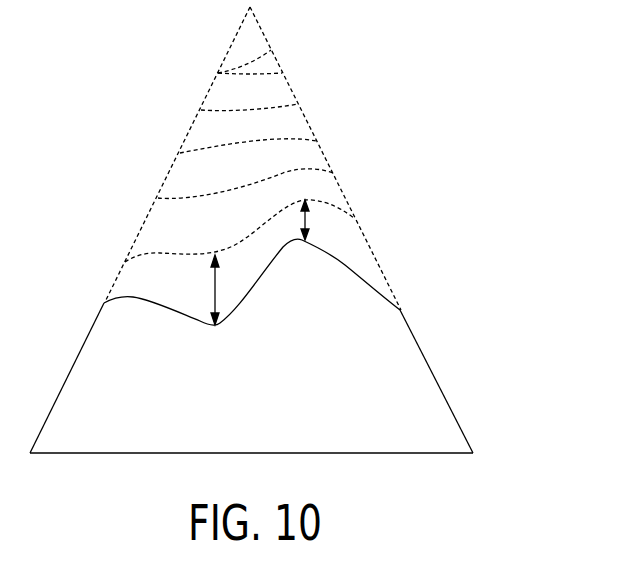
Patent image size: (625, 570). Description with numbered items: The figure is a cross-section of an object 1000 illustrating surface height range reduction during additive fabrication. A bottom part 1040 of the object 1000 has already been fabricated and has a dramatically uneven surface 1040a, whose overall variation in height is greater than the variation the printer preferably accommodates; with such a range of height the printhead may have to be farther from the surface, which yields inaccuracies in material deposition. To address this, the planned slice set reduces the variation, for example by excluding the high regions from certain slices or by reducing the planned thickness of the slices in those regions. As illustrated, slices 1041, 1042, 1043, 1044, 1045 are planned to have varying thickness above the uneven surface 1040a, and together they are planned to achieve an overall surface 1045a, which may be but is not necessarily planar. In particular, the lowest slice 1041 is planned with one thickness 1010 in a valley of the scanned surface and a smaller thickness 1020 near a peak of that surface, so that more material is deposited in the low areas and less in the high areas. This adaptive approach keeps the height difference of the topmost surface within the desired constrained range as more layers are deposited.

The object 1000 is at (468, 130).
The bottom part 1040 is at (420, 378).
The uneven surface 1040a is at (377, 292).
The slice 1041 is at (371, 257).
The slice 1042 is at (340, 198).
The slice 1043 is at (322, 153).
The slice 1044 is at (304, 119).
The slice 1045 is at (289, 88).
The overall surface 1045a is at (272, 51).
The thickness 1010 is at (213, 290).
The thickness 1020 is at (303, 222).